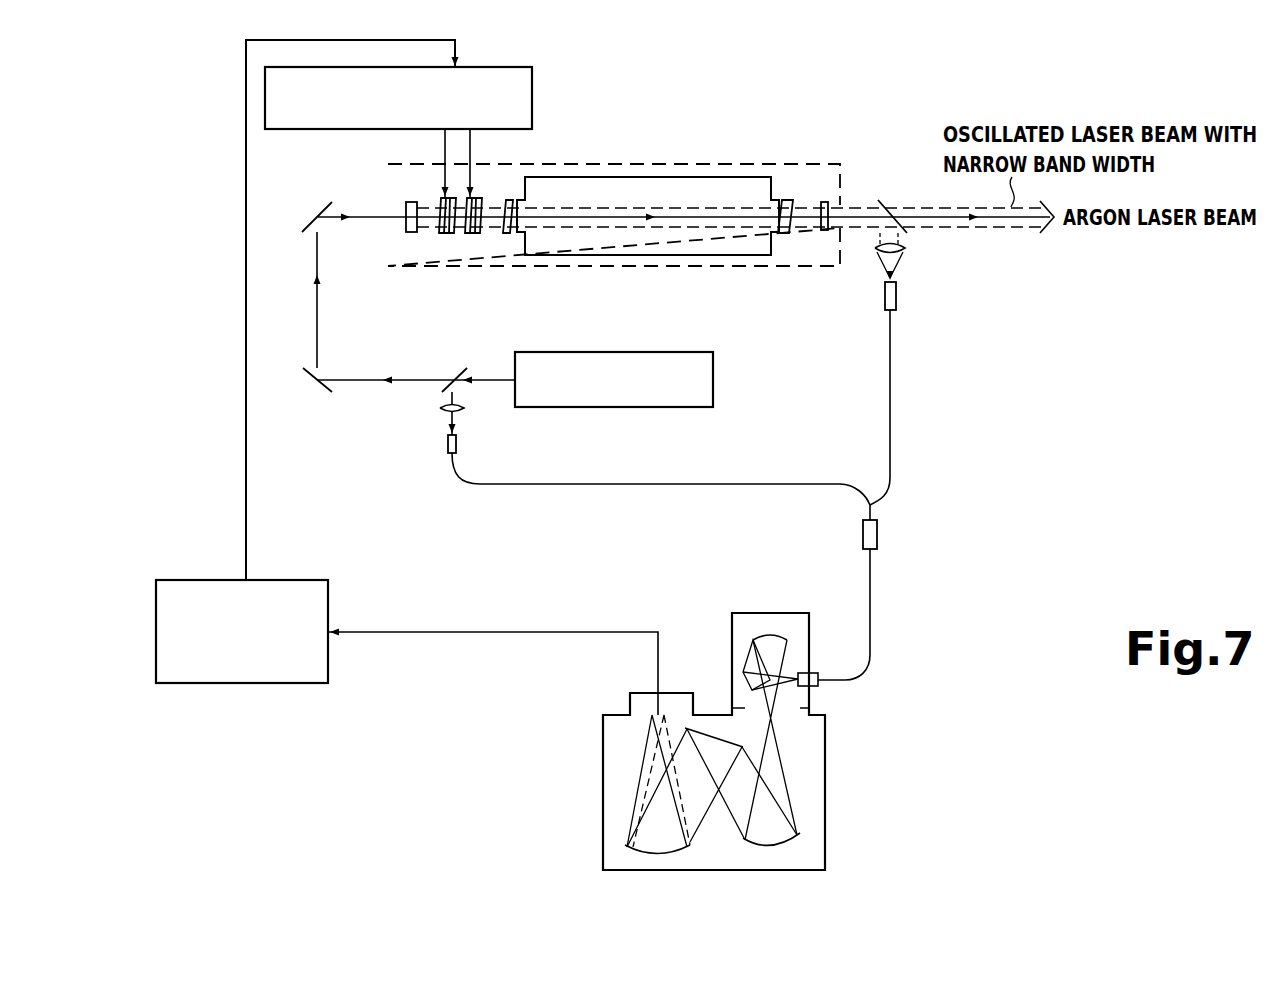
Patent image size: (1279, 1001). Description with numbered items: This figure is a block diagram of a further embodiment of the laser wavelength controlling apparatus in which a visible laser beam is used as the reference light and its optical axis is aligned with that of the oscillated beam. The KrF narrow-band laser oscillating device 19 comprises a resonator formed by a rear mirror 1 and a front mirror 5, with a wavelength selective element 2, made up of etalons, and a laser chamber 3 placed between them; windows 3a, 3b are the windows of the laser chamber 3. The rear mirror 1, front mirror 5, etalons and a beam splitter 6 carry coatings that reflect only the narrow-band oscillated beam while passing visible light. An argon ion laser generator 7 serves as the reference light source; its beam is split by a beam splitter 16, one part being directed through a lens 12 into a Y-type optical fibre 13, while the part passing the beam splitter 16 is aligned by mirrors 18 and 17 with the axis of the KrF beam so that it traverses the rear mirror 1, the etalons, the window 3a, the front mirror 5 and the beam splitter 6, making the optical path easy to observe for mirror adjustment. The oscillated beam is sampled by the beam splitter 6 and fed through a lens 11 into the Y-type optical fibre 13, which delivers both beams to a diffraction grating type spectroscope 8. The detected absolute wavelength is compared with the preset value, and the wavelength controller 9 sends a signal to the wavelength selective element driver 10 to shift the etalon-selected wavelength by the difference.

The rear mirror 1 is at (411, 234).
The wavelength selective element 2 is at (456, 235).
The laser chamber 3 is at (657, 177).
The window 3a is at (784, 200).
The window 3b is at (508, 200).
The front mirror 5 is at (826, 200).
The beam splitter 6 is at (905, 228).
The argon ion laser generator 7 is at (584, 352).
The diffraction grating type spectroscope 8 is at (603, 765).
The wavelength controller 9 is at (287, 580).
The wavelength selective element driver 10 is at (532, 72).
The lens 11 is at (904, 258).
The lens 12 is at (462, 411).
The Y-type optical fibre 13 is at (603, 484).
The beam splitter 16 is at (462, 372).
The mirror 17 is at (327, 391).
The mirror 18 is at (318, 206).
The KrF narrow-band laser oscillating device 19 is at (816, 163).